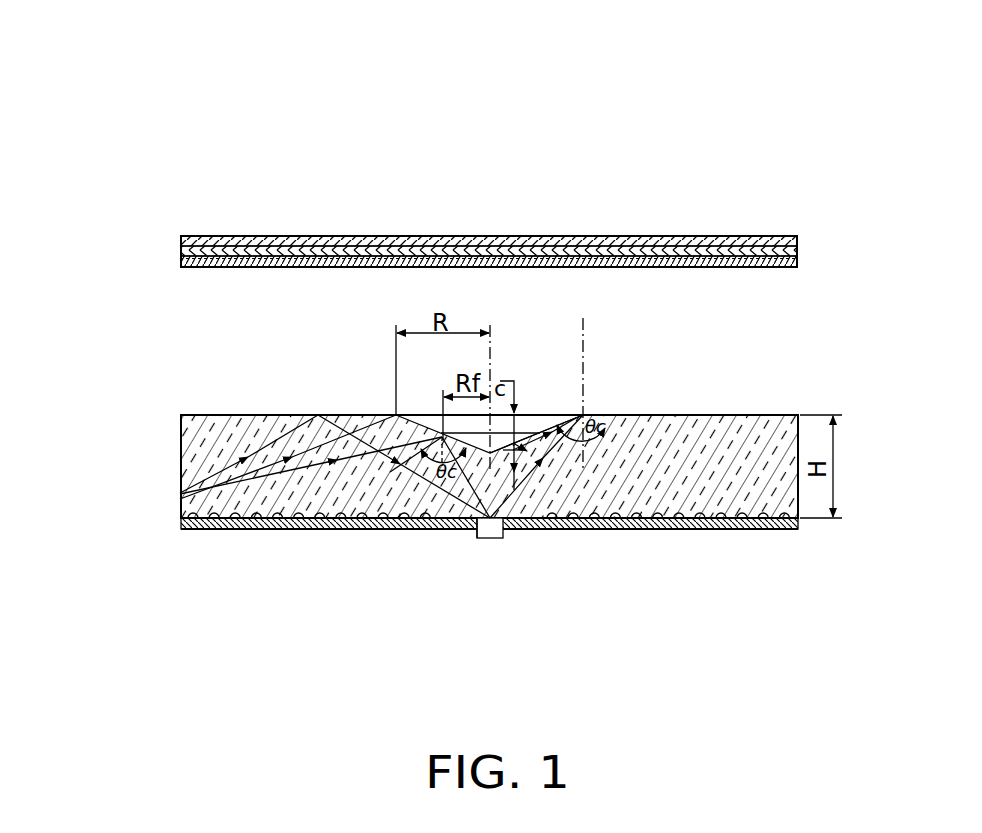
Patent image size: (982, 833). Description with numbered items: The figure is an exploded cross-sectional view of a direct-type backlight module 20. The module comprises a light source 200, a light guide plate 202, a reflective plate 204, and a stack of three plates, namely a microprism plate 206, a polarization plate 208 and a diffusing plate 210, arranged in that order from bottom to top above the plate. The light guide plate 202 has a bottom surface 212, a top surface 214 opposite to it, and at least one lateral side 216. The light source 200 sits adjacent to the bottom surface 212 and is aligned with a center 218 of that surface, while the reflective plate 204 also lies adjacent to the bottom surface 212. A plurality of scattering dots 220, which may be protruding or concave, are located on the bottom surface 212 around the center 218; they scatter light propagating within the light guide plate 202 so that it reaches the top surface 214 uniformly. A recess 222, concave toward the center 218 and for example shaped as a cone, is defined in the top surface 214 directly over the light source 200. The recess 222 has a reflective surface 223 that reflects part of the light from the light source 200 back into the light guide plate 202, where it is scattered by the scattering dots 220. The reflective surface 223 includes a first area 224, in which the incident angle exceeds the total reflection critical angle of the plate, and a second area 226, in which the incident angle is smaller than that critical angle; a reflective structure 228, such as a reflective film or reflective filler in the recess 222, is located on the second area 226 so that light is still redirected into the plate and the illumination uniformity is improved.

The direct-type backlight module 20 is at (514, 62).
The light source 200 is at (490, 538).
The light guide plate 202 is at (106, 383).
The reflective plate 204 is at (777, 524).
The microprism plate 206 is at (797, 262).
The polarization plate 208 is at (797, 251).
The diffusing plate 210 is at (794, 238).
The bottom surface 212 is at (205, 522).
The top surface 214 is at (211, 413).
The lateral side 216 is at (181, 450).
The center 218 is at (478, 535).
The scattering dots 220 is at (256, 522).
The recess 222 is at (427, 426).
The reflective surface 223 is at (536, 501).
The first area 224 is at (552, 428).
The second area 226 is at (525, 442).
The reflective structure 228 is at (518, 440).